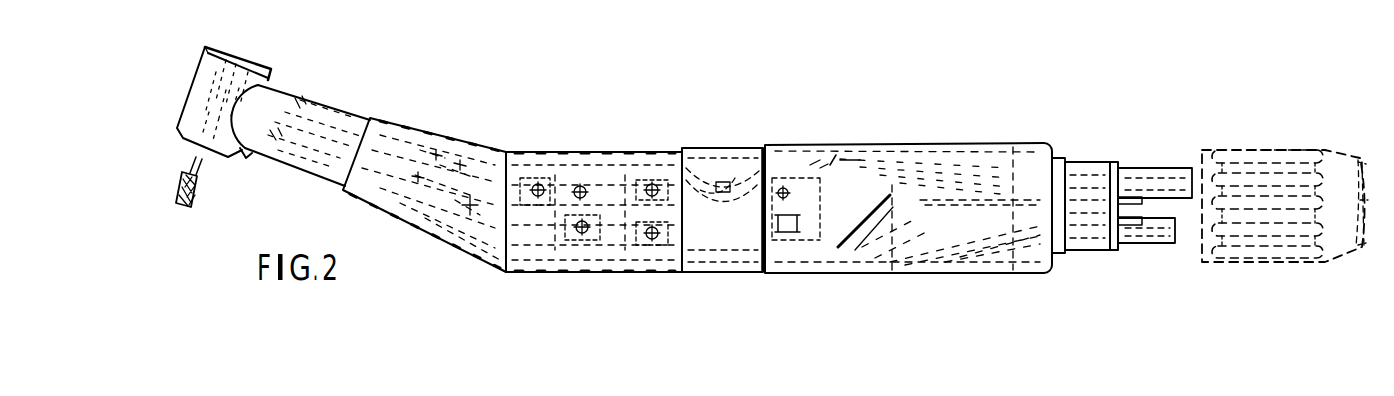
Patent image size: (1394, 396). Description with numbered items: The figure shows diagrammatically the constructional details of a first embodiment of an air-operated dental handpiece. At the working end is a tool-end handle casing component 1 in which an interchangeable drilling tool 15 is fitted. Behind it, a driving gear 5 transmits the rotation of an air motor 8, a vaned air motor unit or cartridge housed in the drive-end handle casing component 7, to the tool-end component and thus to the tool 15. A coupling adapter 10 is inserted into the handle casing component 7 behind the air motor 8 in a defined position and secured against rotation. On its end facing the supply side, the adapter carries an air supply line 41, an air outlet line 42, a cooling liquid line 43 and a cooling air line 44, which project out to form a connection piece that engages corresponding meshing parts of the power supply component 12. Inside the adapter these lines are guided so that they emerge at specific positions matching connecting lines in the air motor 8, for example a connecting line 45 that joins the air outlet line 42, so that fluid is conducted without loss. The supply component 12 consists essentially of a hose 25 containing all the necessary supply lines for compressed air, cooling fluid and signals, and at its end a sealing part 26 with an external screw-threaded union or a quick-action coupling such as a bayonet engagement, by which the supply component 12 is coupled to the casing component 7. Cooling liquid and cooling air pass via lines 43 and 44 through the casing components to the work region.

The tool-end handle casing component 1 is at (325, 102).
The driving gear 5 is at (558, 200).
The drive-end handle casing component 7 is at (720, 146).
The air motor 8 is at (744, 177).
The coupling adapter 10 is at (1076, 154).
The power supply component 12 is at (1235, 148).
The drilling tool 15 is at (197, 192).
The hose 25 is at (1365, 246).
The sealing part 26 is at (1275, 150).
The air supply line 41 is at (1170, 243).
The air outlet line 42 is at (1125, 173).
The cooling liquid line 43 is at (1136, 199).
The cooling air line 44 is at (1138, 225).
The connecting line 45 is at (787, 165).